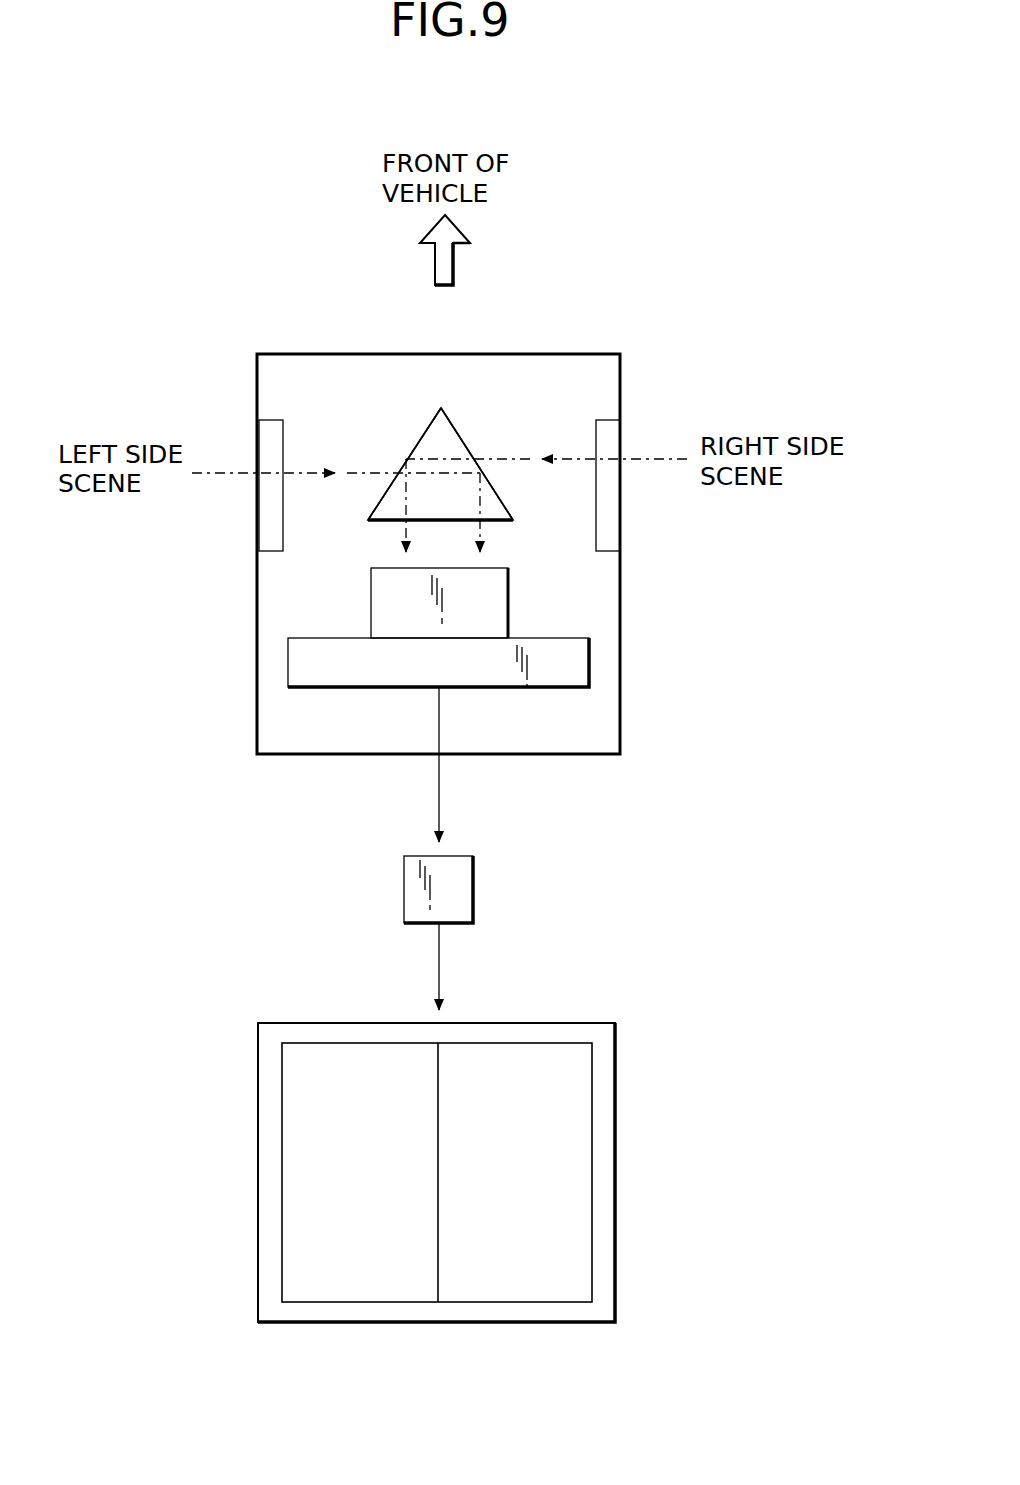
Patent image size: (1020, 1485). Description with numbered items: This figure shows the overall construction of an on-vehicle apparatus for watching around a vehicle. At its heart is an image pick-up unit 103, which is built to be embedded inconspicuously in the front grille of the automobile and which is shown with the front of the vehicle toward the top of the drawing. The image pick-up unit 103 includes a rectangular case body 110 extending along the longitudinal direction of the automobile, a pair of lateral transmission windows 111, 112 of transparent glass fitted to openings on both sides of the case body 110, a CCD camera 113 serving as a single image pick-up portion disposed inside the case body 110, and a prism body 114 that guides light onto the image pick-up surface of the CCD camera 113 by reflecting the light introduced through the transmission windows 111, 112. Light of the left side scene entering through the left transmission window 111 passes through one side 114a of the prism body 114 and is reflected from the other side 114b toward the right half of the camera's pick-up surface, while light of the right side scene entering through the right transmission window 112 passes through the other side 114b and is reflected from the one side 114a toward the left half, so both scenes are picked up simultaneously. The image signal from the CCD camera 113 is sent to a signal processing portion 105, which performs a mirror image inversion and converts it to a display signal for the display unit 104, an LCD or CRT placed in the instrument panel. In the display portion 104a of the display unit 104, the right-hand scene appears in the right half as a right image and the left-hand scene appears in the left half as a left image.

The image pick-up unit 103 is at (440, 599).
The display unit 104 is at (490, 1172).
The display portion 104a is at (592, 1125).
The signal processing portion 105 is at (492, 874).
The case body 110 is at (257, 716).
The left transmission window 111 is at (265, 528).
The right transmission window 112 is at (613, 527).
The CCD camera 113 is at (490, 603).
The prism body 114 is at (438, 447).
The one side of prism body 114a is at (410, 448).
The other side of prism body 114b is at (473, 448).